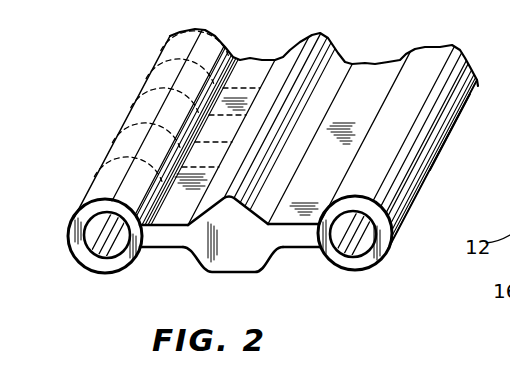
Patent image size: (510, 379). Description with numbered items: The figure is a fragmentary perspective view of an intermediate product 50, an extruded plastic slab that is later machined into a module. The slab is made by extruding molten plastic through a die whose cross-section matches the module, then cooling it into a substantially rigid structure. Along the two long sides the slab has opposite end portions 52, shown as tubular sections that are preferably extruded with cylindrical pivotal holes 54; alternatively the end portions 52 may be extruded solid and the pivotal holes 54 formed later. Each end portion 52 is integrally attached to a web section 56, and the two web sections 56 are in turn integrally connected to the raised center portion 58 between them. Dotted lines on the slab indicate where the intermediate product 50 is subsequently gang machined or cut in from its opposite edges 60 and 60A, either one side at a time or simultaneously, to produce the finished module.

The intermediate product 50 is at (268, 158).
The end portion 52 is at (73, 220).
The pivotal hole 54 is at (107, 240).
The web section 56 is at (167, 236).
The center portion 58 is at (233, 257).
The opposite edge 60 is at (116, 143).
The opposite edge 60A is at (437, 157).